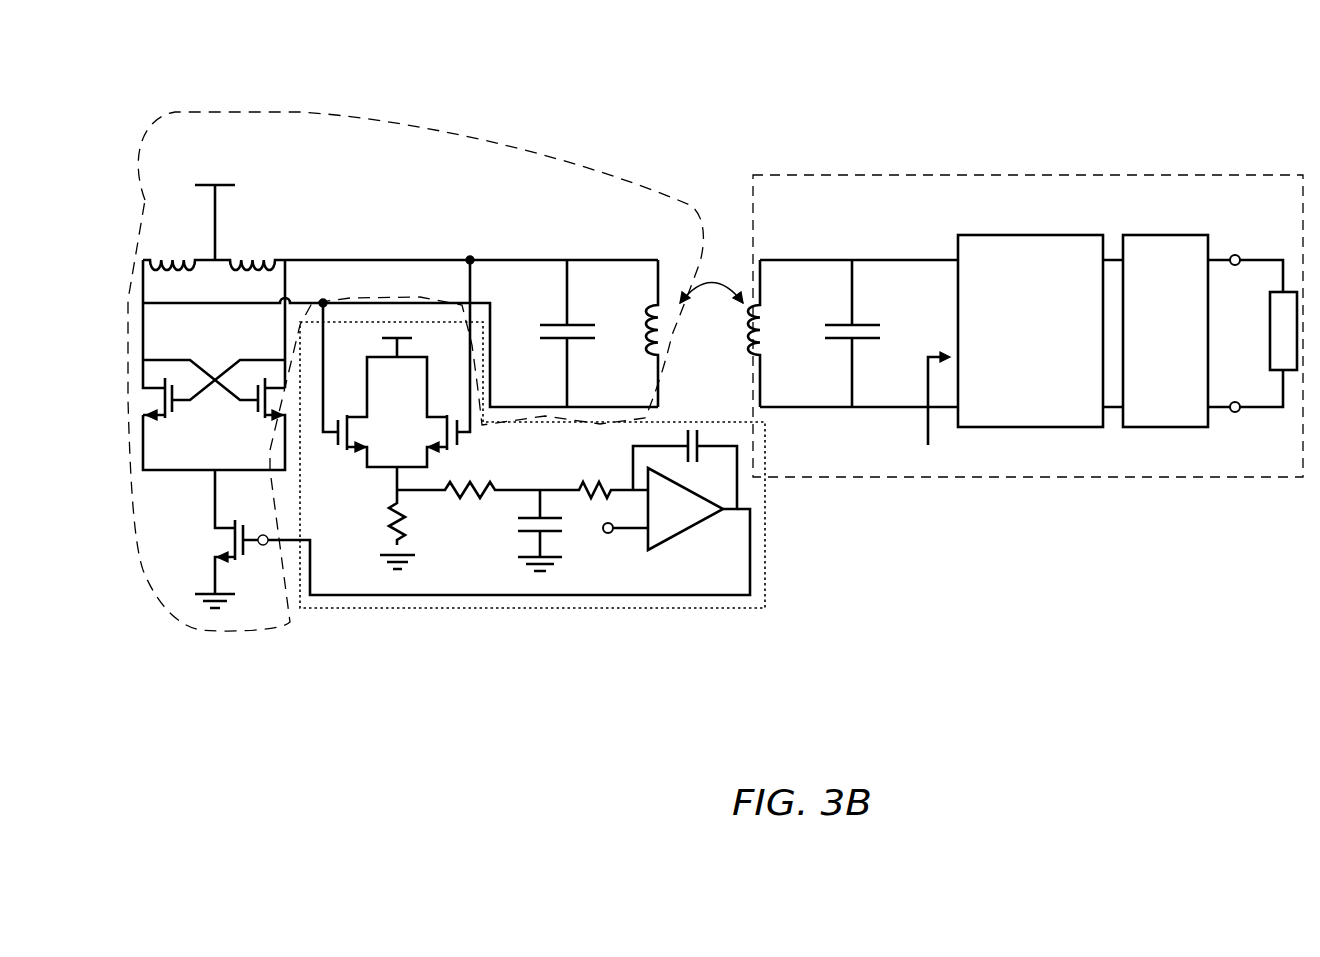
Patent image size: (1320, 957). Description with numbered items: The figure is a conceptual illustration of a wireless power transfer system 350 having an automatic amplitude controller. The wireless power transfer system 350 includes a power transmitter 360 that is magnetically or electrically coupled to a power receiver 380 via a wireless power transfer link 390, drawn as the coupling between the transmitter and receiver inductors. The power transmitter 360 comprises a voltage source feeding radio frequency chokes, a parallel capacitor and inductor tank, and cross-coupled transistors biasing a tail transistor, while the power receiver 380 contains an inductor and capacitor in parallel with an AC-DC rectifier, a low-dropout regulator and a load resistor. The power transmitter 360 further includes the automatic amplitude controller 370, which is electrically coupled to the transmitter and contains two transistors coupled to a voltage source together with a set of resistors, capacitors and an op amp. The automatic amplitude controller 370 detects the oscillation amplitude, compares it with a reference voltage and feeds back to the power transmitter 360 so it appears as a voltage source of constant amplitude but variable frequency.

The wireless power transfer system 350 is at (1133, 80).
The power transmitter 360 is at (505, 130).
The automatic amplitude controller 370 is at (443, 610).
The power receiver 380 is at (815, 172).
The wireless power transfer link 390 is at (703, 272).